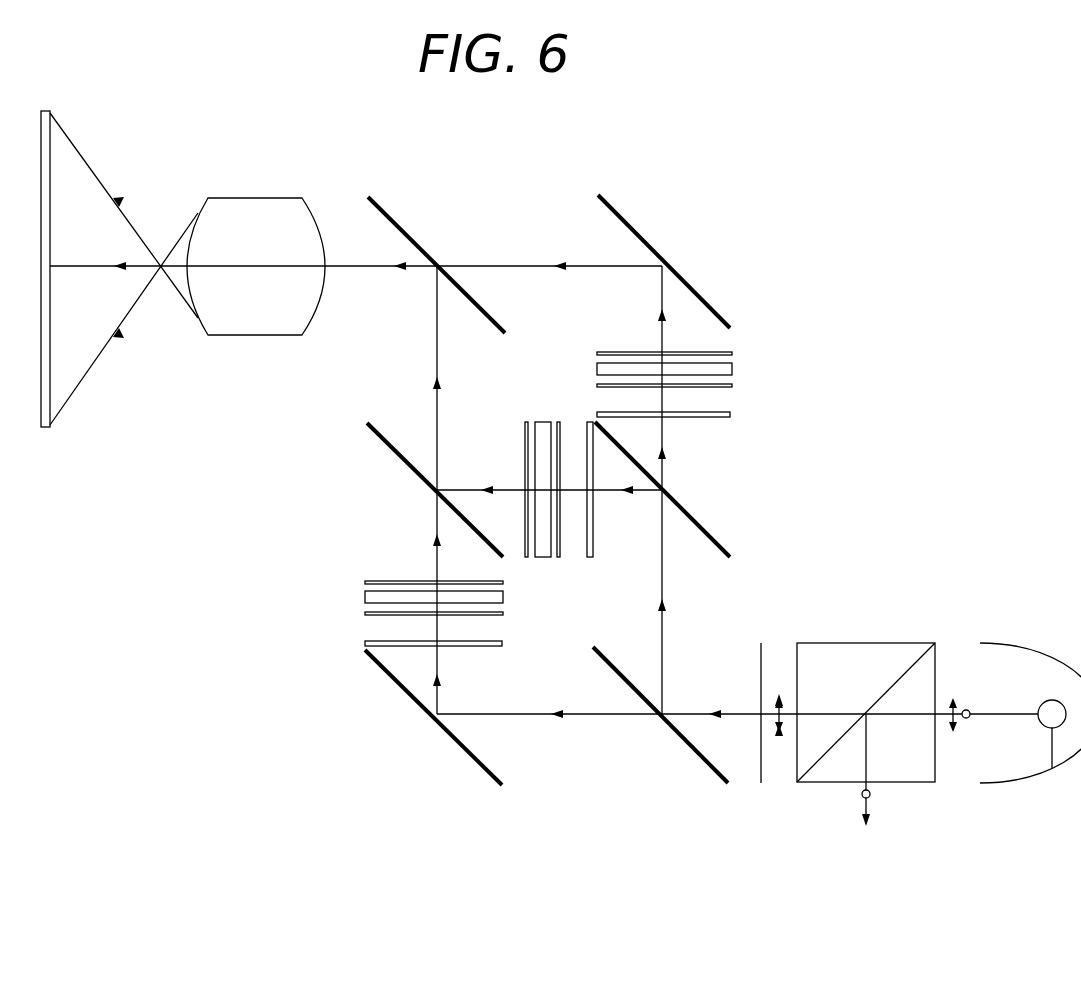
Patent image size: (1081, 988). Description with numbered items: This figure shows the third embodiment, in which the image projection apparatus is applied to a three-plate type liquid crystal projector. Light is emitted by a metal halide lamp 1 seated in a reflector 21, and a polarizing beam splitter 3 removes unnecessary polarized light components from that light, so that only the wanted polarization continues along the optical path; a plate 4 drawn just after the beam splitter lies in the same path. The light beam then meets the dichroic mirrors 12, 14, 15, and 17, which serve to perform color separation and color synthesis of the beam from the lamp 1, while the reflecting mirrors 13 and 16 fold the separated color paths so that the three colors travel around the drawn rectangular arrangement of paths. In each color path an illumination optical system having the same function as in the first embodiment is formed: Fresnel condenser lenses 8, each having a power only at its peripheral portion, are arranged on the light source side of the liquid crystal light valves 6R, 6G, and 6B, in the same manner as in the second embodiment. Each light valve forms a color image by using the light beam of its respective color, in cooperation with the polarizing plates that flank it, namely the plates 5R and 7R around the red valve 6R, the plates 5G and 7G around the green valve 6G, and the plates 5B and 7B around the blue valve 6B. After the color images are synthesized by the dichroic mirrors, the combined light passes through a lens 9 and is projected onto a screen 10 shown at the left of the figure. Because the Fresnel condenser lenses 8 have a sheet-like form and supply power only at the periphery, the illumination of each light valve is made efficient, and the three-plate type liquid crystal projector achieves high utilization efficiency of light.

The metal halide lamp 1 is at (1052, 768).
The reflector 21 is at (1020, 783).
The polarizing beam splitter 3 is at (910, 783).
The polarizer 4 is at (760, 785).
The dichroic mirror 12 is at (705, 760).
The reflecting mirror 13 is at (478, 766).
The dichroic mirror 14 is at (710, 530).
The dichroic mirror 15 is at (395, 455).
The reflecting mirror 16 is at (713, 305).
The dichroic mirror 17 is at (382, 203).
The polarizing plate 5R is at (726, 388).
The liquid crystal light valve 6R is at (735, 369).
The polarizing plate 7R is at (722, 350).
The polarizing plate 5G is at (559, 558).
The liquid crystal light valve 6G is at (543, 558).
The polarizing plate 7G is at (527, 558).
The polarizing plate 5B is at (365, 614).
The liquid crystal light valve 6B is at (365, 597).
The polarizing plate 7B is at (365, 582).
The Fresnel condenser lens 8 is at (730, 418).
The projection lens 9 is at (253, 336).
The screen 10 is at (44, 428).